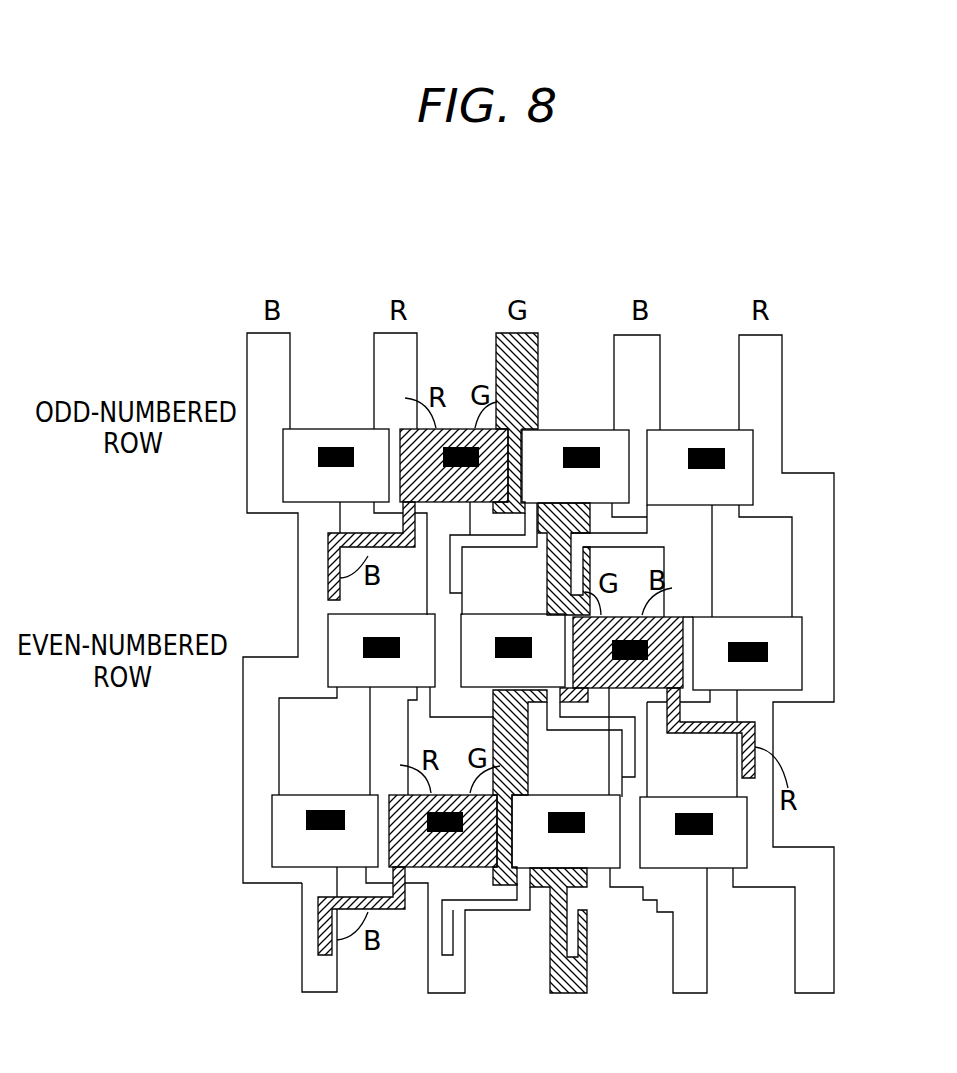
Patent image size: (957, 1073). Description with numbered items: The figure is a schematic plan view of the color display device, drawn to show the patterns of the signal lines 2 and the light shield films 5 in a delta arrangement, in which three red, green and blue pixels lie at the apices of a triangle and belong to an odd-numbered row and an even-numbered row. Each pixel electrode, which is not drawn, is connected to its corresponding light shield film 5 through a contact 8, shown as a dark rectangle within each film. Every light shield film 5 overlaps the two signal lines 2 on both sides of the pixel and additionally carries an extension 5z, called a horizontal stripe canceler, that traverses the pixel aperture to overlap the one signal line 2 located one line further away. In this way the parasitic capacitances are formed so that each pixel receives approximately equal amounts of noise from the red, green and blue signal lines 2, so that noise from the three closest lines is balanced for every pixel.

The contact 8 is at (330, 447).
The light shield film 5 is at (355, 429).
The extension 5z is at (327, 568).
The signal line 2 is at (302, 953).